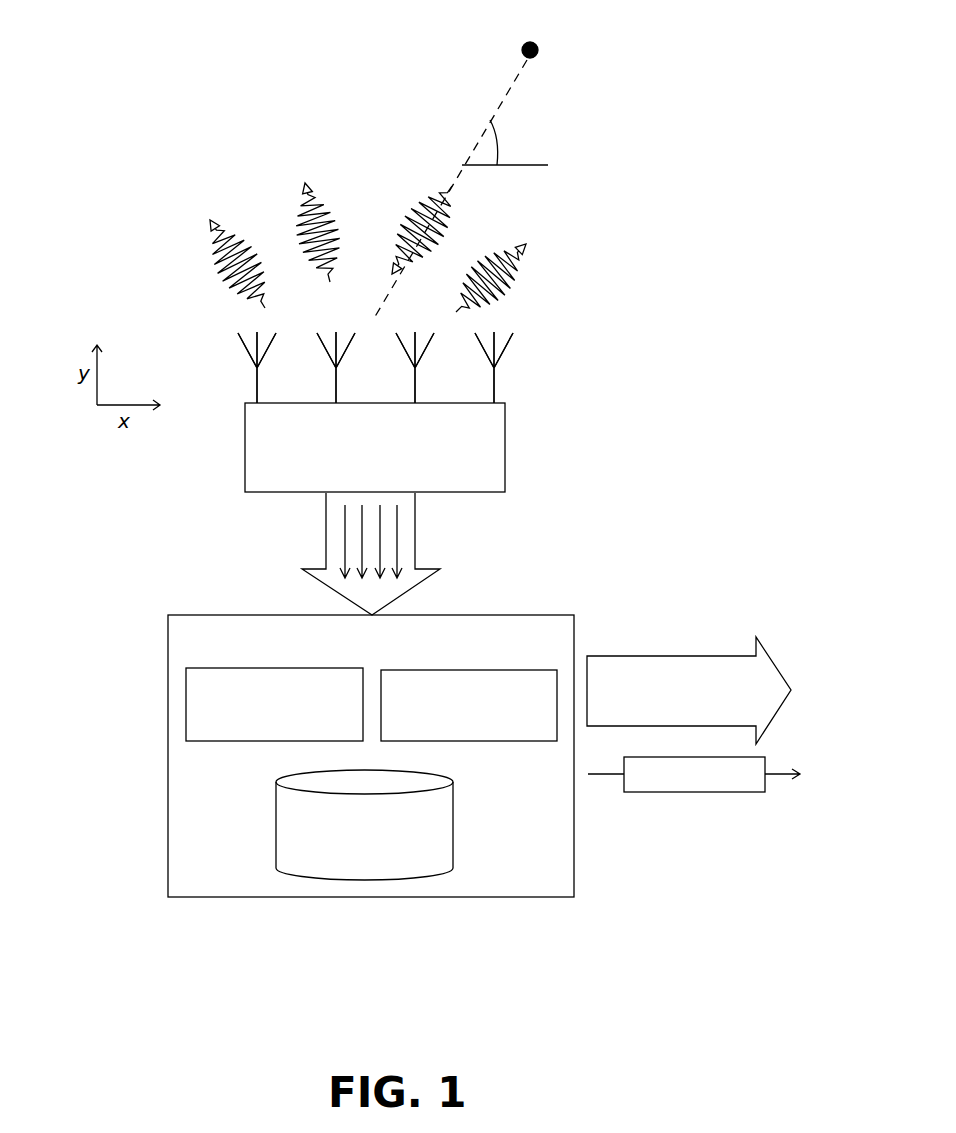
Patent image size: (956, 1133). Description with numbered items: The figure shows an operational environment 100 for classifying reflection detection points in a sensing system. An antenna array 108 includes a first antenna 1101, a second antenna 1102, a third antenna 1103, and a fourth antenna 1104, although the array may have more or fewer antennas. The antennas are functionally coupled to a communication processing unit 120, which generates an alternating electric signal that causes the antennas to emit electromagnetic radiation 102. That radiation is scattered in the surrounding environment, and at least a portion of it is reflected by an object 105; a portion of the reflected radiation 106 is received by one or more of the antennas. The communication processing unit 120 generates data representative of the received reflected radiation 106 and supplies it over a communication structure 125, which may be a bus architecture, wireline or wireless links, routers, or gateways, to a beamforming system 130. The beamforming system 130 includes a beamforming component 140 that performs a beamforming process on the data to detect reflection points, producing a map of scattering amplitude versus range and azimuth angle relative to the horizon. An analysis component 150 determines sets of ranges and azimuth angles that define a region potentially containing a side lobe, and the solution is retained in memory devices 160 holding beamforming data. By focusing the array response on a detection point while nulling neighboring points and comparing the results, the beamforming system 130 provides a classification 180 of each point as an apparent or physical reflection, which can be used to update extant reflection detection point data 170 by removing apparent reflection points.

The operational environment 100 is at (165, 38).
The electromagnetic radiation 102 is at (182, 246).
The object 105 is at (538, 45).
The reflected radiation 106 is at (470, 208).
The antenna array 108 is at (222, 318).
The first antenna 1101 is at (257, 375).
The second antenna 1102 is at (336, 395).
The third antenna 1103 is at (415, 395).
The fourth antenna 1104 is at (494, 378).
The communication processing unit 120 is at (505, 437).
The communication structure 125 is at (415, 537).
The beamforming system 130 is at (168, 615).
The beamforming component 140 is at (272, 668).
The analysis component 150 is at (468, 670).
The memory devices 160 is at (277, 782).
The data 170 is at (690, 656).
The classification 180 is at (695, 792).